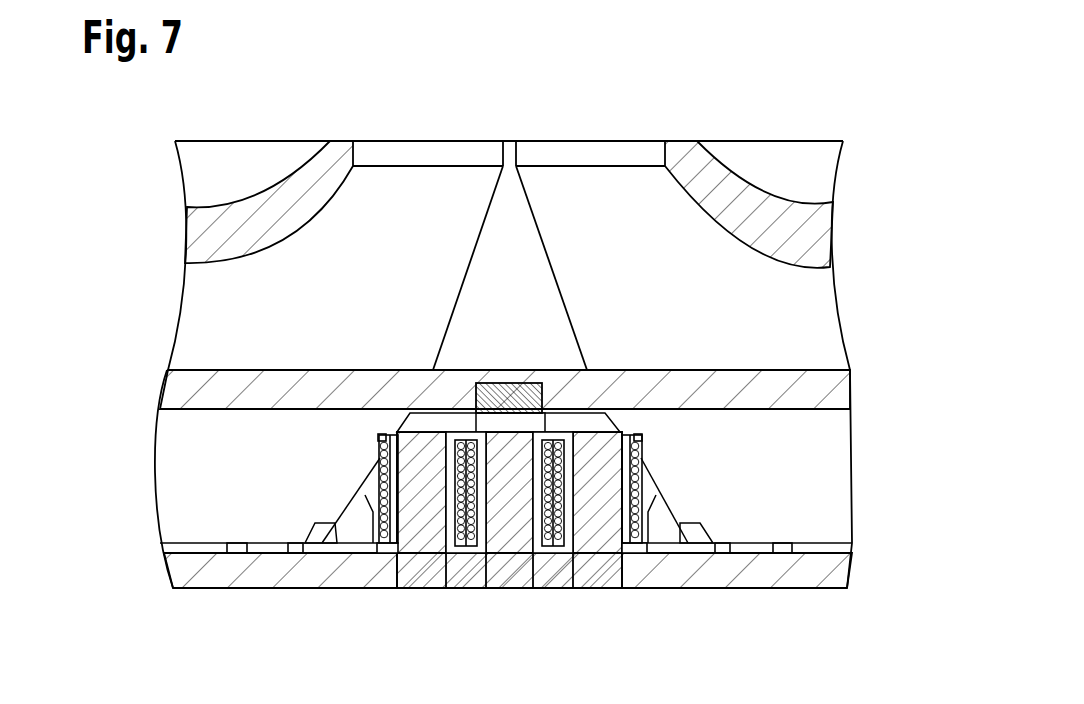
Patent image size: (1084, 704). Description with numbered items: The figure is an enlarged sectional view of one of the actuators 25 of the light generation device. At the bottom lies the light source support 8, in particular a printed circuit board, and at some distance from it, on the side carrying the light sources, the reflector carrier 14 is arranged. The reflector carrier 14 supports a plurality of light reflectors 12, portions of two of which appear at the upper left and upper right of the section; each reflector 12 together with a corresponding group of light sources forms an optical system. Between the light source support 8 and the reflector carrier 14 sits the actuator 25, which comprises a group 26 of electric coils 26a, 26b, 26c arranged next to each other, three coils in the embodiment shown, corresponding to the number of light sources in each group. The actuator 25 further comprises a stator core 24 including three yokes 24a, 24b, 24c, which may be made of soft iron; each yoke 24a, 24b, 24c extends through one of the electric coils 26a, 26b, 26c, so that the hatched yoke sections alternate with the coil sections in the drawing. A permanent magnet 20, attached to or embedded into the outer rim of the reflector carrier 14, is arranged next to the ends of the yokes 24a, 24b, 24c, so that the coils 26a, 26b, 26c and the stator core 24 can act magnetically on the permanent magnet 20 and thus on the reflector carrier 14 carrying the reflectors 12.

The light source support 8 is at (760, 570).
The light reflector 12 is at (336, 218).
The reflector carrier 14 is at (720, 393).
The permanent magnet 20 is at (527, 392).
The stator core 24 is at (488, 568).
The yoke 24a is at (428, 513).
The yoke 24b is at (513, 515).
The yoke 24c is at (602, 515).
The actuator 25 is at (346, 430).
The group of electric coils 26 is at (392, 600).
The electric coil 26a is at (381, 428).
The electric coil 26b is at (470, 426).
The electric coil 26c is at (634, 428).